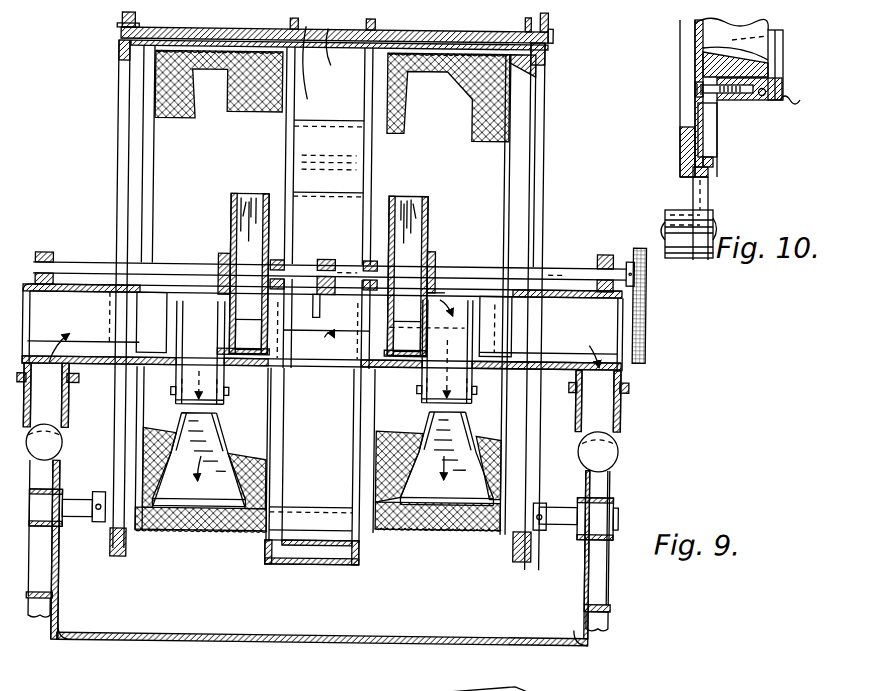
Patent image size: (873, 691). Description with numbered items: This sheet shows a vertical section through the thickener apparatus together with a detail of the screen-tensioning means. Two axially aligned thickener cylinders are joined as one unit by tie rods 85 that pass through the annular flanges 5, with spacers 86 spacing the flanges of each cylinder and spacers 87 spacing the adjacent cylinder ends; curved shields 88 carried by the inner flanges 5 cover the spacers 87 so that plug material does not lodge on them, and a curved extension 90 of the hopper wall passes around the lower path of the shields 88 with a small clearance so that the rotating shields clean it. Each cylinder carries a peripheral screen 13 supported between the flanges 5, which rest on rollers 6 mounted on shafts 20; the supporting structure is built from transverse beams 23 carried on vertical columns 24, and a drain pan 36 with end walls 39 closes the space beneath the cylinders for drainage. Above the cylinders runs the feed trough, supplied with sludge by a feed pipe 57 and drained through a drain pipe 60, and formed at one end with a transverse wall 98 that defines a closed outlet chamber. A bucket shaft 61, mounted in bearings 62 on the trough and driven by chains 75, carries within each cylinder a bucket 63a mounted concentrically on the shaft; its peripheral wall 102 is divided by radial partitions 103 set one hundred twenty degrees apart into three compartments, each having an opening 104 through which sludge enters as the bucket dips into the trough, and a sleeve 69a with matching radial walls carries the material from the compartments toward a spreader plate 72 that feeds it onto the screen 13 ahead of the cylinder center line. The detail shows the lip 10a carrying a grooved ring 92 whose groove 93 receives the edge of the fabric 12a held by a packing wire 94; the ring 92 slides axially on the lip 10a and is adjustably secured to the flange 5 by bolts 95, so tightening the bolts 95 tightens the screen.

In FIG. 9, the annular flange 5 is at (116, 15).
In FIG. 10, the annular flange 5 is at (680, 140).
In FIG. 9, the roller 6 is at (118, 470).
In FIG. 10, the lip 10a is at (715, 45).
In FIG. 10, the fabric 12a is at (755, 102).
In FIG. 9, the peripheral screen 13 is at (243, 52).
In FIG. 9, the shaft 20 is at (80, 510).
In FIG. 9, the transverse beam 23 is at (38, 605).
In FIG. 9, the vertical column 24 is at (47, 613).
In FIG. 9, the drain pan 36 is at (260, 638).
In FIG. 9, the end wall 39 is at (60, 605).
In FIG. 9, the feed pipe 57 is at (70, 403).
In FIG. 9, the drain pipe 60 is at (622, 450).
In FIG. 9, the shaft 61 is at (68, 262).
In FIG. 9, the bearing 62 is at (44, 253).
In FIG. 9, the bucket 63a is at (228, 205).
In FIG. 9, the sleeve 69a is at (220, 255).
In FIG. 9, the spreader plate 72 is at (218, 493).
In FIG. 9, the chain 75 is at (650, 348).
In FIG. 9, the tie rod 85 is at (440, 38).
In FIG. 9, the spacer 86 is at (332, 95).
In FIG. 9, the spacer 87 is at (325, 63).
In FIG. 9, the curved shield 88 is at (320, 583).
In FIG. 9, the curved extension 90 is at (342, 560).
In FIG. 10, the grooved ring 92 is at (773, 77).
In FIG. 10, the groove 93 is at (781, 104).
In FIG. 10, the packing wire 94 is at (748, 100).
In FIG. 10, the bolt 95 is at (695, 90).
In FIG. 9, the transverse wall 98 is at (415, 690).
In FIG. 9, the peripheral wall 102 is at (250, 353).
In FIG. 9, the radial partition 103 is at (257, 200).
In FIG. 9, the opening 104 is at (238, 193).